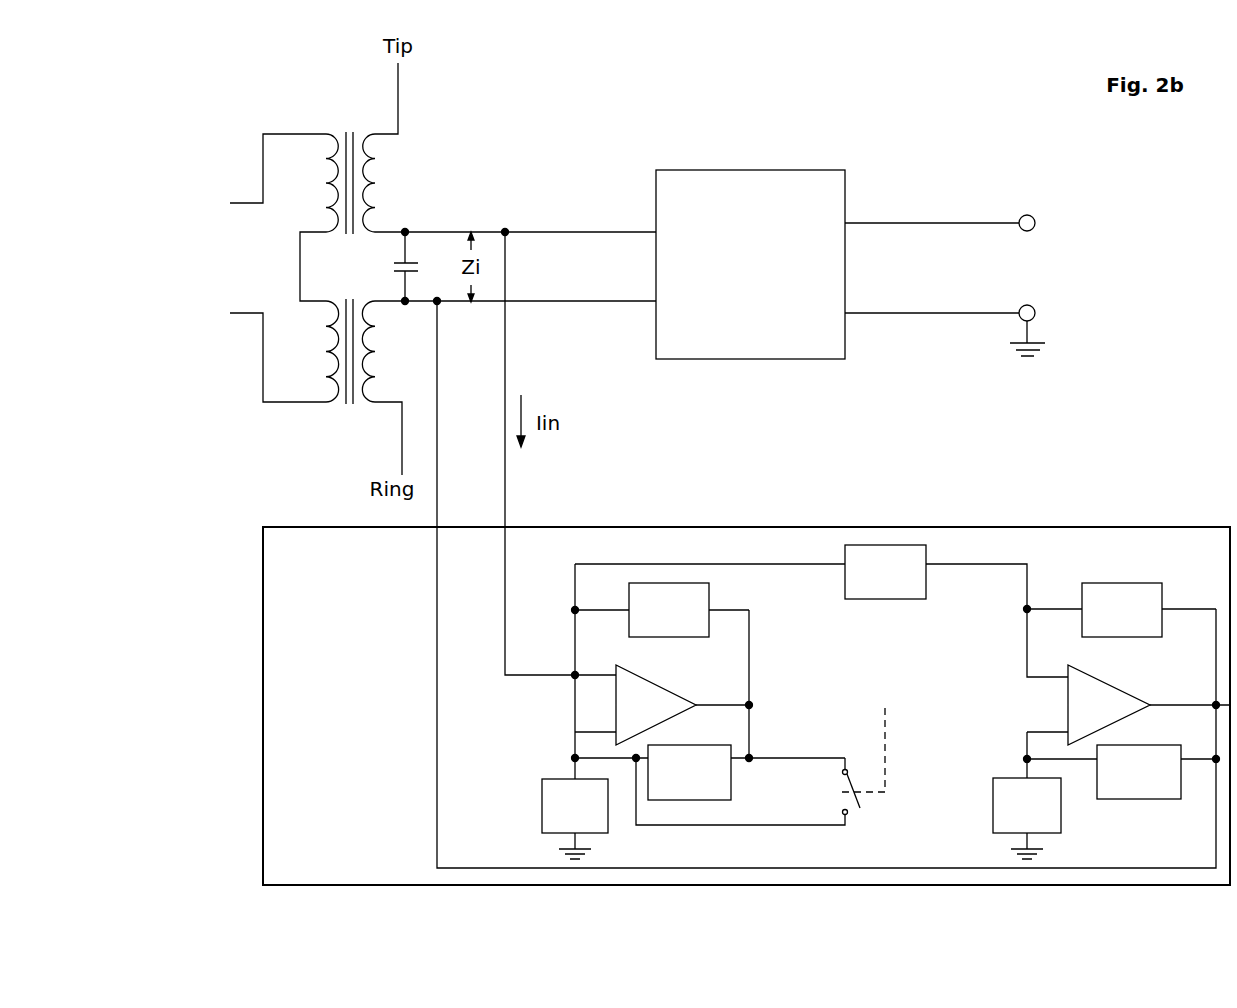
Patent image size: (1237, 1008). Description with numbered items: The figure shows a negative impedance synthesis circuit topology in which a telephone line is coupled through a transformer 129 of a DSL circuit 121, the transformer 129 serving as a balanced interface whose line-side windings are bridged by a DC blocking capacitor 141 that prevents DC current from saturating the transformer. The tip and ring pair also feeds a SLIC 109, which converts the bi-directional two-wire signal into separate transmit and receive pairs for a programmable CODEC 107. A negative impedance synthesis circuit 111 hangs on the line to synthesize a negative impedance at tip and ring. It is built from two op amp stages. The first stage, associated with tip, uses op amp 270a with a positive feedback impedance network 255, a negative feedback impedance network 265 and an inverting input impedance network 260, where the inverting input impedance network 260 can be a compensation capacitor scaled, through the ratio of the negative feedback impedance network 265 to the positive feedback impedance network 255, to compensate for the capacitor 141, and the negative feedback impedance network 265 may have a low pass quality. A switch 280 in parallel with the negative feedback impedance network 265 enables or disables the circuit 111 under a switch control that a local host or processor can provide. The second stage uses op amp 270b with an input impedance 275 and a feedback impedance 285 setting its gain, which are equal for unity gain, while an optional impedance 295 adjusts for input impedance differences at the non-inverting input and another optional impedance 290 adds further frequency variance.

The transformer 129 is at (316, 269).
The DC blocking capacitor 141 is at (380, 266).
The DSL circuit 121 is at (223, 260).
The subscriber line interface circuit (SLIC) 109 is at (750, 264).
The programmable CODEC 107 is at (1024, 272).
The negative impedance synthesis circuit 111 is at (746, 706).
The positive feedback impedance network Z1 255 is at (662, 610).
The negative feedback impedance network Z2 265 is at (710, 772).
The inverting input impedance network Z3 260 is at (575, 808).
The impedance Z4 275 is at (821, 611).
The impedance Z5 295 is at (1027, 818).
The impedance Z6 290 is at (1121, 772).
The impedance Z7 285 is at (1121, 610).
The op amp 270a is at (662, 697).
The op amp 270b is at (1091, 721).
The switch 280 is at (779, 764).